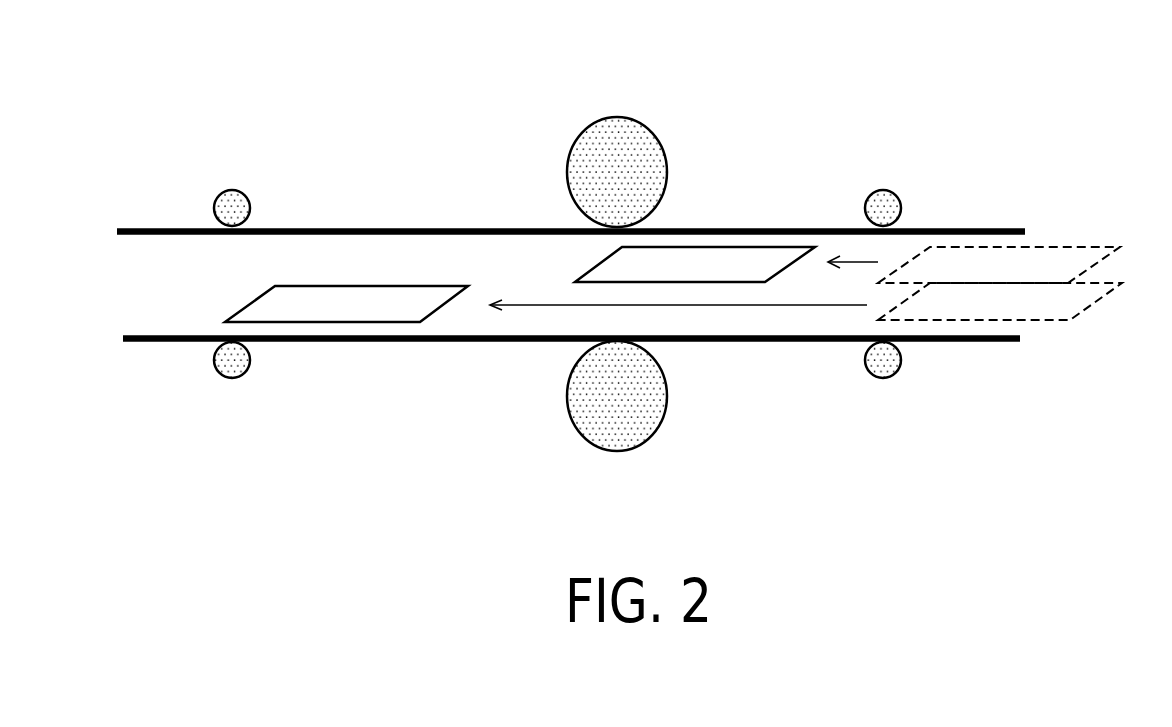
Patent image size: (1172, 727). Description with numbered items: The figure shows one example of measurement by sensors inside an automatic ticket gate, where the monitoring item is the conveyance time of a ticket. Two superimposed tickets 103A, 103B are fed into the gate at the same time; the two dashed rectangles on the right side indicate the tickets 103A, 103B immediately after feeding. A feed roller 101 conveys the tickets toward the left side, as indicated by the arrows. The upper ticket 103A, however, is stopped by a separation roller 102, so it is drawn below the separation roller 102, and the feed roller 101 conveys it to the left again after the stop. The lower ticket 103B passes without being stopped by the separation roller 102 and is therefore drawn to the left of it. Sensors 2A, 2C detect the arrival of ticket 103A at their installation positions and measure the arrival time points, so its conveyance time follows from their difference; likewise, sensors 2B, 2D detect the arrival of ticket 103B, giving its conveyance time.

The sensor 2A is at (882, 190).
The sensor 2B is at (882, 379).
The sensor 2C is at (232, 190).
The sensor 2D is at (230, 380).
The feed roller 101 is at (617, 452).
The separation roller 102 is at (617, 118).
The ticket 103A is at (600, 262).
The ticket 103B is at (246, 306).